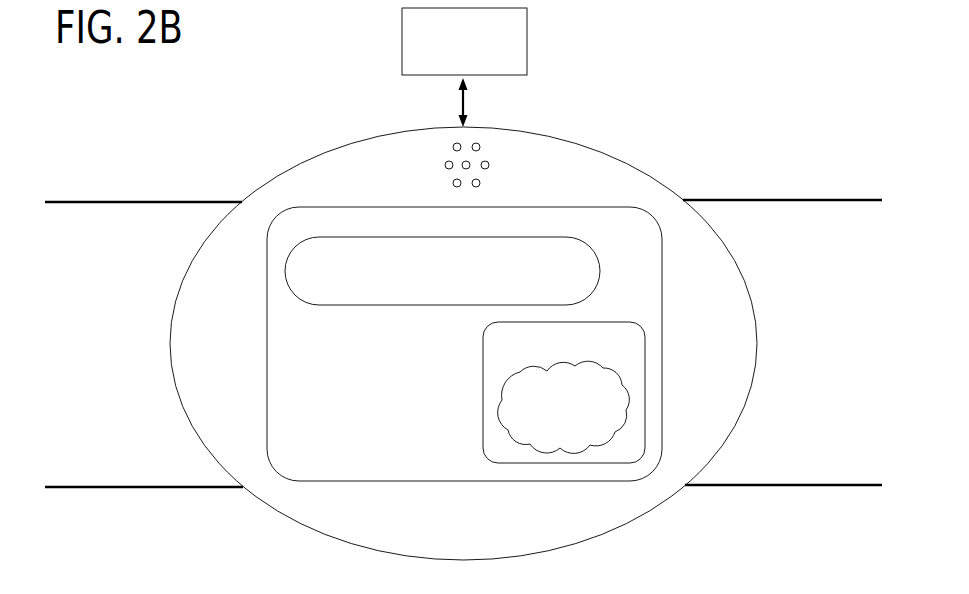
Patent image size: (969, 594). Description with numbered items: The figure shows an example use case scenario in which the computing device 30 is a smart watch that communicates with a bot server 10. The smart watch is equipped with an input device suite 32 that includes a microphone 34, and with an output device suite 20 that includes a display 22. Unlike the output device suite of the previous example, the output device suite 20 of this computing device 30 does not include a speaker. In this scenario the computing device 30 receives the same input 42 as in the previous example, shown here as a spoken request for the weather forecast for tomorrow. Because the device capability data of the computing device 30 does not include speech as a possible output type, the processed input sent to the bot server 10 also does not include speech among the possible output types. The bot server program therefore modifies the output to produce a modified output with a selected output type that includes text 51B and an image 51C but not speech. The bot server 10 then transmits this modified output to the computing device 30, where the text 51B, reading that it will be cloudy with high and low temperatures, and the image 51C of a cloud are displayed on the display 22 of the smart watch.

The bot server 10 is at (464, 41).
The output device suite 20 is at (464, 483).
The display 22 is at (465, 341).
The computing device 30 is at (270, 181).
The input device suite 32 is at (412, 150).
The microphone 34 is at (488, 168).
The input 42 is at (385, 237).
The text 51B is at (483, 392).
The image 51C is at (564, 407).